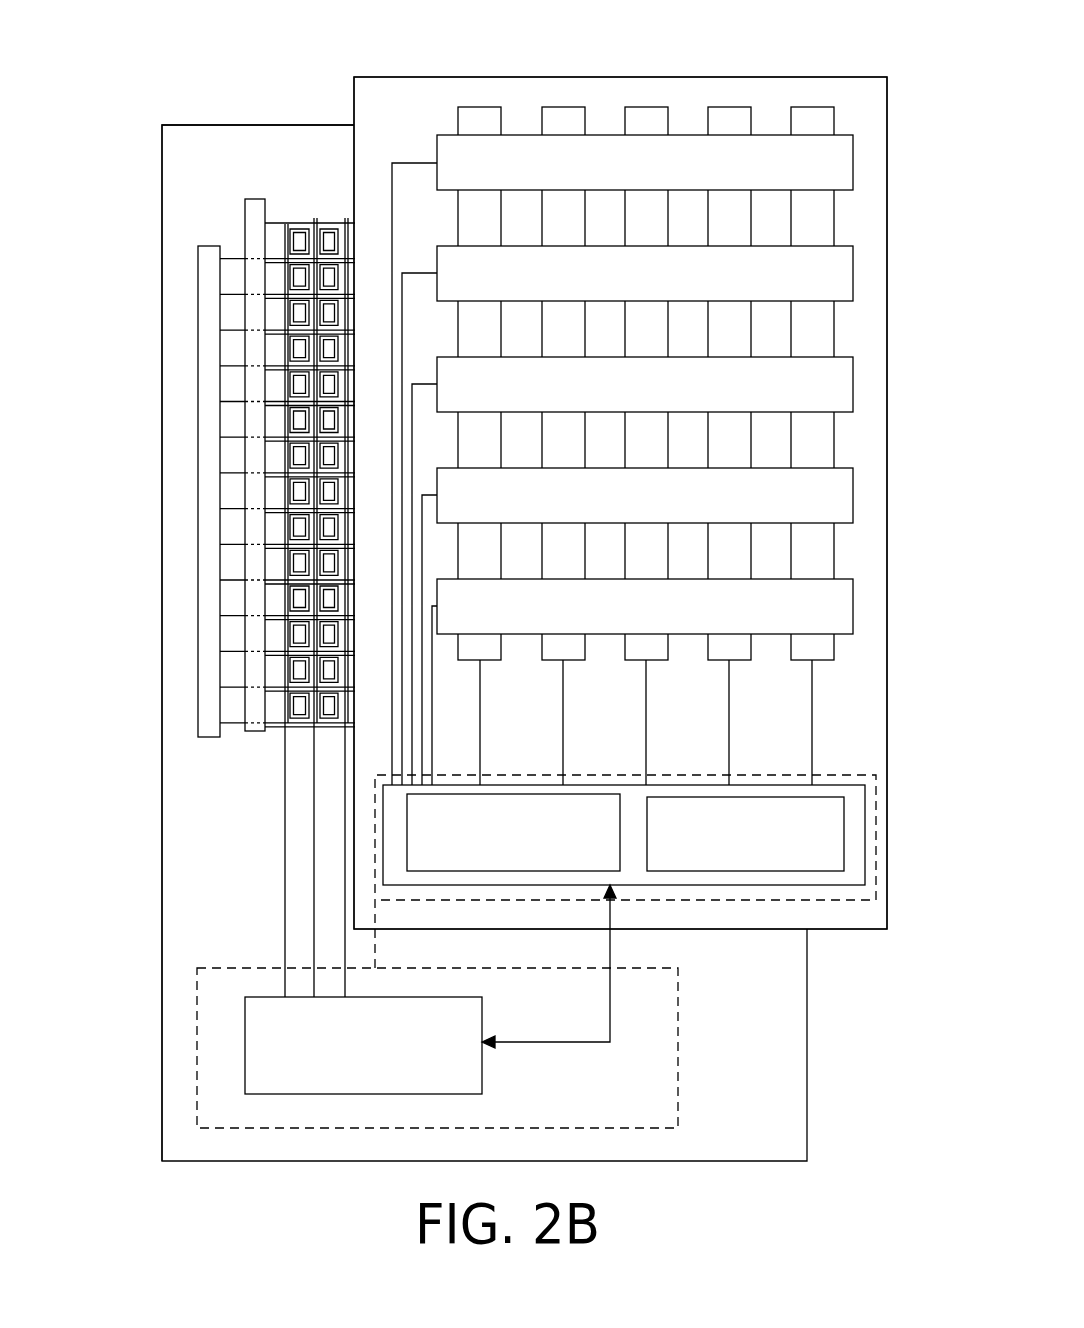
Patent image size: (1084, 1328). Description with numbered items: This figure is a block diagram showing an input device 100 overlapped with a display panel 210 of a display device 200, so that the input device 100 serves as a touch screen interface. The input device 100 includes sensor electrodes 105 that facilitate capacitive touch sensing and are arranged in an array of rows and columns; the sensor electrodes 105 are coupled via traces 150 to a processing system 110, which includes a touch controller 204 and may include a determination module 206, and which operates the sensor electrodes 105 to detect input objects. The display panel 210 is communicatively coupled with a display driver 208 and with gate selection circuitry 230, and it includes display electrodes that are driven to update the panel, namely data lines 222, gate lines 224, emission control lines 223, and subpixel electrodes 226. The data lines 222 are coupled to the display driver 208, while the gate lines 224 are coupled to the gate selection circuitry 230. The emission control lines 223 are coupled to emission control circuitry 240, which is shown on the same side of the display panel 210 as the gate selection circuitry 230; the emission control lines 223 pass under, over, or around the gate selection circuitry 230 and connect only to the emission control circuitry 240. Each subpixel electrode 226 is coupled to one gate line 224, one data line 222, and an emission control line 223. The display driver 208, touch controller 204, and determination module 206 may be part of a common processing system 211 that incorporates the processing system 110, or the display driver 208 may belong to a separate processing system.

The display device 200 is at (132, 100).
The display panel 210 is at (207, 125).
The gate lines 224 is at (278, 222).
The data lines 222 is at (284, 222).
The subpixel electrodes 226 is at (297, 232).
The gate selection circuitry 230 is at (255, 203).
The emission control circuitry 240 is at (198, 733).
The emission control lines 223 is at (280, 723).
The sensor electrodes 105 is at (516, 97).
The input device 100 is at (842, 70).
The traces 150 is at (813, 724).
The processing system 211 is at (876, 818).
The processing system 110 is at (813, 885).
The touch controller 204 is at (448, 872).
The determination module 206 is at (670, 869).
The display driver 208 is at (245, 1046).